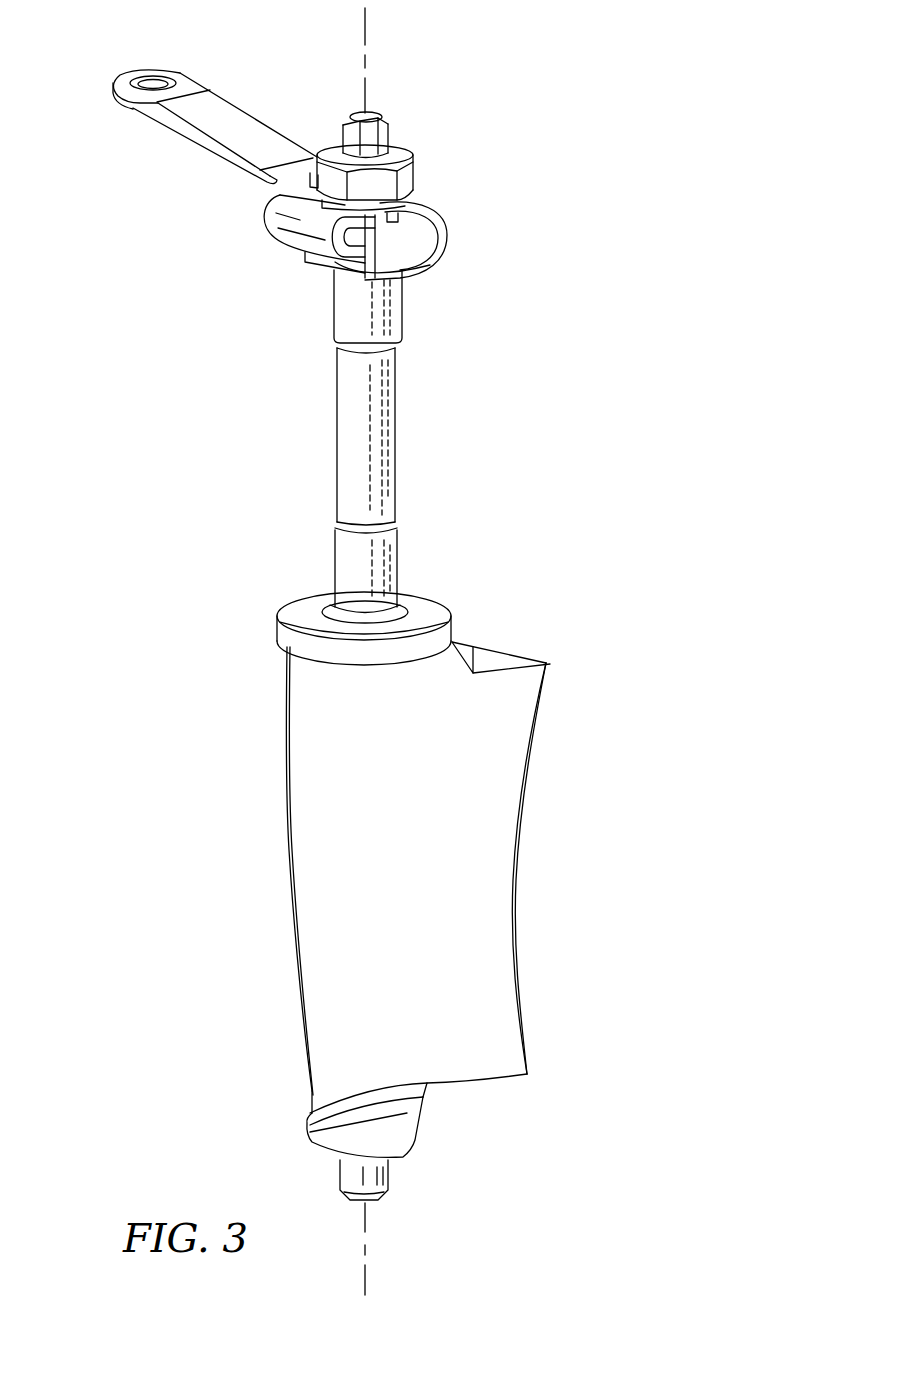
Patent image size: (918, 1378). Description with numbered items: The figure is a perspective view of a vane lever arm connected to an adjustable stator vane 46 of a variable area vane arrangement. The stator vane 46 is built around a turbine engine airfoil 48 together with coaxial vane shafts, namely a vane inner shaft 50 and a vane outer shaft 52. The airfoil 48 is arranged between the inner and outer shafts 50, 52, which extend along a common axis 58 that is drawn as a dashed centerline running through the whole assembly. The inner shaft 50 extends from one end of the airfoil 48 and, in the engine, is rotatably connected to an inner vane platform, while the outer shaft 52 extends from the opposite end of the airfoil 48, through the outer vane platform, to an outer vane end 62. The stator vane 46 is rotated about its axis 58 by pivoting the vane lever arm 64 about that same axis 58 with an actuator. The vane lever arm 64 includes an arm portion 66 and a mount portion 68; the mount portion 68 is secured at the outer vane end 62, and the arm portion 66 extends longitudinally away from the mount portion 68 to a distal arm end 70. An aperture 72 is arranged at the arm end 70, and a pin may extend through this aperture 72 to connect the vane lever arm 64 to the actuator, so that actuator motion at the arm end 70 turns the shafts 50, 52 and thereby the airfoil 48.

The adjustable stator vane 46 is at (445, 743).
The turbine engine airfoil 48 is at (497, 858).
The vane inner shaft 50 is at (378, 1180).
The vane outer shaft 52 is at (385, 438).
The axis 58 is at (365, 35).
The outer vane end 62 is at (378, 115).
The vane lever arm 64 is at (179, 104).
The arm portion 66 is at (243, 107).
The mount portion 68 is at (450, 212).
The distal arm end 70 is at (123, 73).
The aperture 72 is at (153, 88).